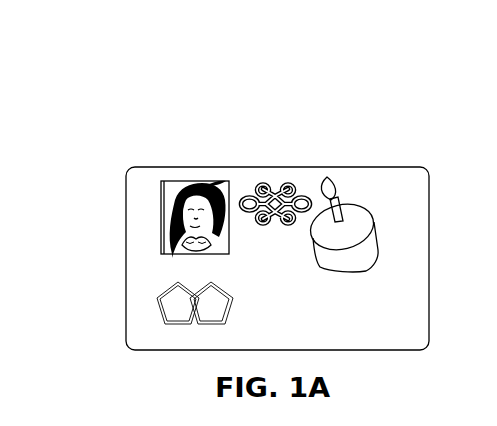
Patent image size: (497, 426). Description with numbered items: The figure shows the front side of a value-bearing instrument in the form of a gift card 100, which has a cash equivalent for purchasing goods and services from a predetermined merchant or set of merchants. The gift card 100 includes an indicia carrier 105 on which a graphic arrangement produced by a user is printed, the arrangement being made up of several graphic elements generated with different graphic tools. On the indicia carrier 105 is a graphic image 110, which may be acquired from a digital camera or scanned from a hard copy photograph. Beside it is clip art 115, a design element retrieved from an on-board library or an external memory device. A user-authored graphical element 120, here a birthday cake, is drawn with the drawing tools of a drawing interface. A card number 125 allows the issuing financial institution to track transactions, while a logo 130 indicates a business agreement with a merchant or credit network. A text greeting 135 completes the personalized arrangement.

The gift card 100 is at (363, 70).
The indicia carrier 105 is at (345, 167).
The graphic image 110 is at (189, 185).
The clip art 115 is at (272, 191).
The graphical element 120 is at (374, 208).
The card number 125 is at (212, 266).
The logo 130 is at (158, 302).
The greeting 135 is at (384, 313).